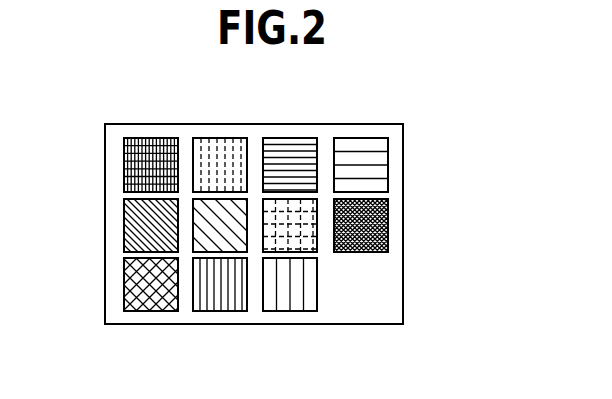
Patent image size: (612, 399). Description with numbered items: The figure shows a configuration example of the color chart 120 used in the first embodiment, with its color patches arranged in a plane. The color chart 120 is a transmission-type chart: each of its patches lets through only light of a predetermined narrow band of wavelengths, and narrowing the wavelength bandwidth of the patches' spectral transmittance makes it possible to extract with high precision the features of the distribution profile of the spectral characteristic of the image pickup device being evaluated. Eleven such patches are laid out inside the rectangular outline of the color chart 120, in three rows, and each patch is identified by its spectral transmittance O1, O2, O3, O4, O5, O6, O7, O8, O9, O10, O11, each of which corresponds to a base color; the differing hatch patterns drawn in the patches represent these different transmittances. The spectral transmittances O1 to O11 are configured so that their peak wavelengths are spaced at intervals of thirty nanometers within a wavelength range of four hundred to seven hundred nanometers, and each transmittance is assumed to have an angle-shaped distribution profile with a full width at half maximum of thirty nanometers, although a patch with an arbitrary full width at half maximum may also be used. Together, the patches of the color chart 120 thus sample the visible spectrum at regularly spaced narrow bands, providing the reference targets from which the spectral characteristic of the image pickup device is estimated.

The color chart 120 is at (403, 290).
The spectral transmittance of the first color patch O1 is at (164, 138).
The spectral transmittance of the second color patch O2 is at (236, 138).
The spectral transmittance of the third color patch O3 is at (308, 138).
The spectral transmittance of the fourth color patch O4 is at (378, 138).
The spectral transmittance of the fifth color patch O5 is at (124, 232).
The spectral transmittance of the sixth color patch O6 is at (193, 237).
The spectral transmittance of the seventh color patch O7 is at (317, 240).
The spectral transmittance of the eighth color patch O8 is at (388, 224).
The spectral transmittance of the ninth color patch O9 is at (124, 297).
The spectral transmittance of the tenth color patch O10 is at (215, 311).
The spectral transmittance of the eleventh color patch O11 is at (276, 311).